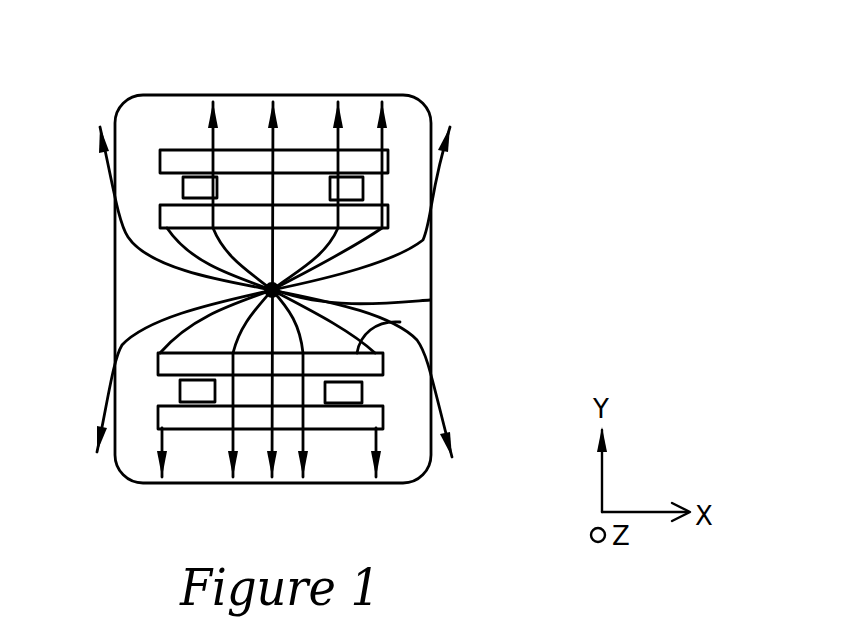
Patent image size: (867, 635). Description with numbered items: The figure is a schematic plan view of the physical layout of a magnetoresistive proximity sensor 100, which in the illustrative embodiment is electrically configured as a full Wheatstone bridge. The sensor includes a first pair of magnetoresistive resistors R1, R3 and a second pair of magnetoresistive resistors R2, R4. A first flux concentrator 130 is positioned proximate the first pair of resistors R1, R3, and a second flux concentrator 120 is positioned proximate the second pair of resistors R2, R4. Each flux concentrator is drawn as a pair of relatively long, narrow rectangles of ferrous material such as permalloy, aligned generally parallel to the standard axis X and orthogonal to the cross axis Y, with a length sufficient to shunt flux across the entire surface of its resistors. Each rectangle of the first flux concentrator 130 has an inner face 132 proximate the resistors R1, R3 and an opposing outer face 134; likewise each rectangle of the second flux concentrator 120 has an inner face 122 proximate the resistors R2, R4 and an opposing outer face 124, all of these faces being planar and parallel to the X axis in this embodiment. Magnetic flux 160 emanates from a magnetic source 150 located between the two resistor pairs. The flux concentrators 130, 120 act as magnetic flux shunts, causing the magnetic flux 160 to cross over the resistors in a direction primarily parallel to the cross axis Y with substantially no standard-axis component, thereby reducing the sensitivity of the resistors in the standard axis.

The magnetoresistive proximity sensor 100 is at (455, 65).
The second flux concentrator 120 is at (363, 157).
The inner face 122 is at (250, 203).
The outer face 124 is at (178, 150).
The first flux concentrator 130 is at (403, 323).
The inner face 132 is at (252, 375).
The outer face 134 is at (160, 353).
The magnetic source 150 is at (280, 290).
The magnetic flux 160 is at (430, 300).
The magnetoresistive resistor R1 is at (180, 392).
The magnetoresistive resistor R2 is at (183, 188).
The magnetoresistive resistor R3 is at (360, 390).
The magnetoresistive resistor R4 is at (360, 188).